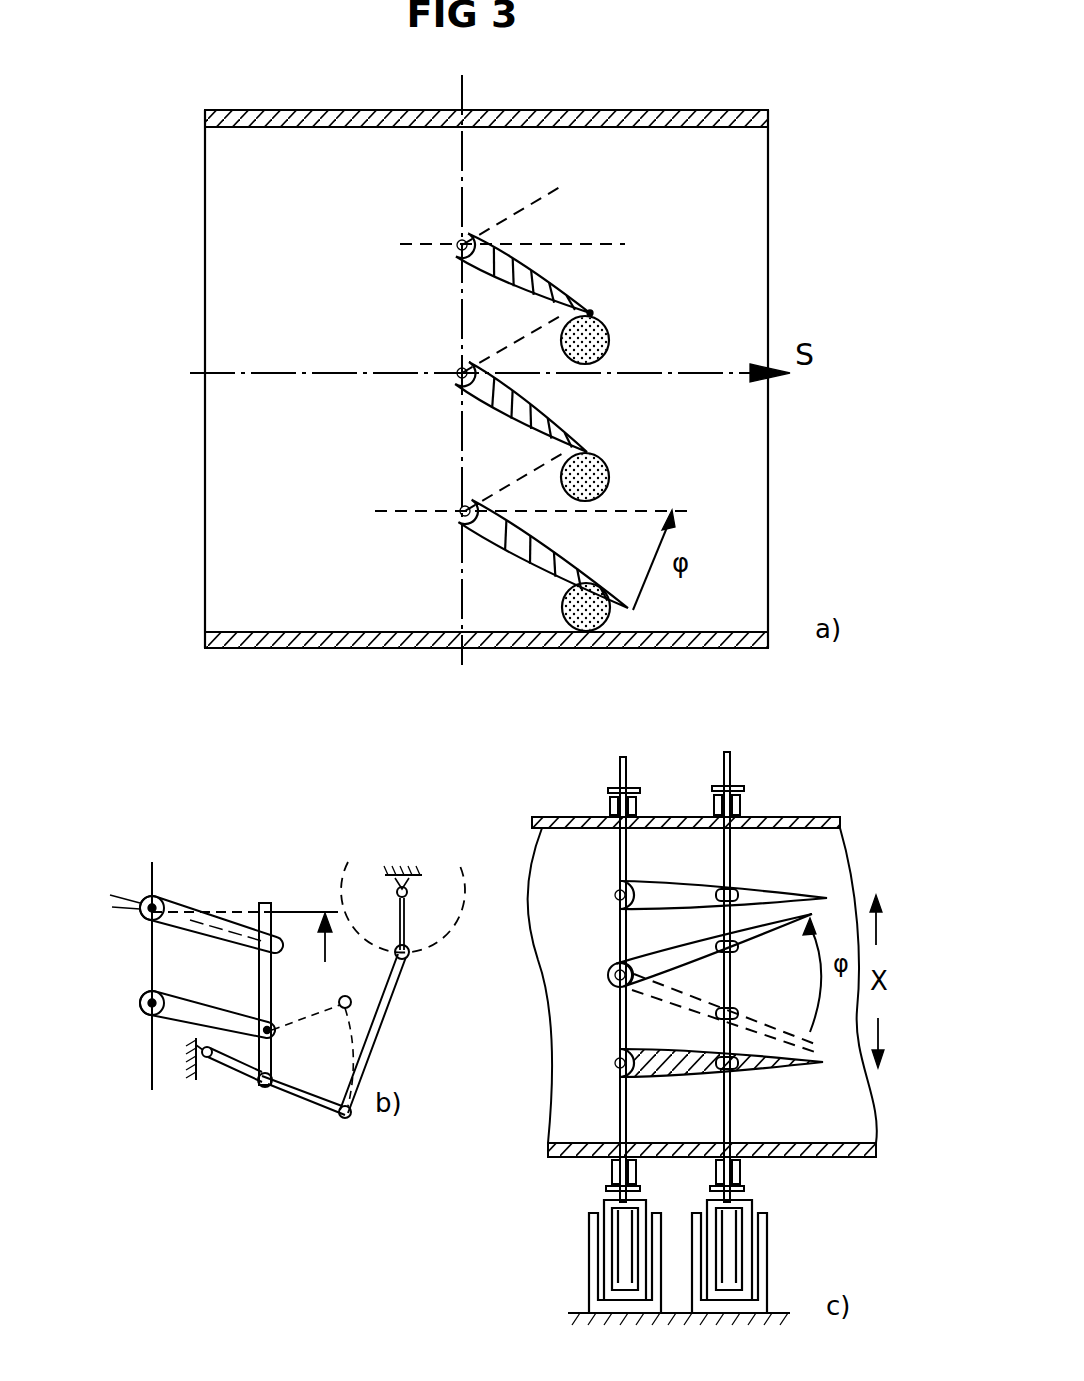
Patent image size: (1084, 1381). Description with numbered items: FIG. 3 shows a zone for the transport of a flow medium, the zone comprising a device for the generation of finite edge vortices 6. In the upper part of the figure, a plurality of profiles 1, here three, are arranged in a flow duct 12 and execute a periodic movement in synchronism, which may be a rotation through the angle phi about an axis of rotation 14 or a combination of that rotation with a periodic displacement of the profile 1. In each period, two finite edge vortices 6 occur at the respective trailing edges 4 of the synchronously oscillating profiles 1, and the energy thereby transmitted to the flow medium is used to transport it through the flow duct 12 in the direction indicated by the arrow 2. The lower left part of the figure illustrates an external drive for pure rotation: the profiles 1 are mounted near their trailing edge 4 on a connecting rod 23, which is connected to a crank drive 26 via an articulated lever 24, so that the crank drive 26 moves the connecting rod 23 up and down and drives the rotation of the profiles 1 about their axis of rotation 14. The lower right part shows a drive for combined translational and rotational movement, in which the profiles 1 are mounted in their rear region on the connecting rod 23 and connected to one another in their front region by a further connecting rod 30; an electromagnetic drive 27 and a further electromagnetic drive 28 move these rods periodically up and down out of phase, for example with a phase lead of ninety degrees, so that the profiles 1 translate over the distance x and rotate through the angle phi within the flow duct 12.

The profile 1 is at (465, 511).
The flow direction arrow 2 is at (718, 373).
The trailing edge 4 is at (590, 315).
The finite edge vortex 6 is at (606, 324).
The flow duct 12 is at (330, 648).
The axis of rotation 14 is at (140, 1000).
The connecting rod 23 is at (772, 962).
The articulated lever 24 is at (308, 1100).
The crank drive 26 is at (405, 908).
The electromagnetic drive 27 is at (767, 1247).
The further electromagnetic drive 28 is at (587, 1258).
The further connecting rod 30 is at (618, 935).